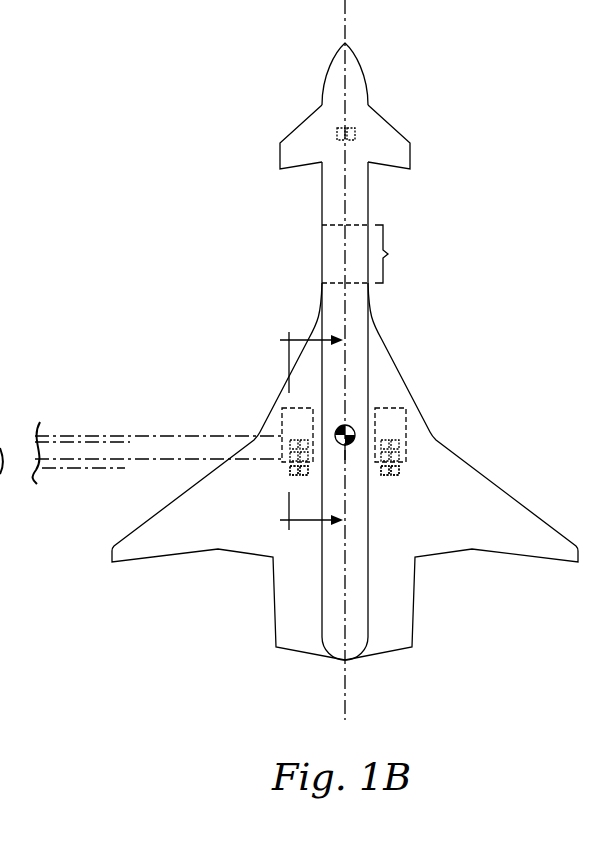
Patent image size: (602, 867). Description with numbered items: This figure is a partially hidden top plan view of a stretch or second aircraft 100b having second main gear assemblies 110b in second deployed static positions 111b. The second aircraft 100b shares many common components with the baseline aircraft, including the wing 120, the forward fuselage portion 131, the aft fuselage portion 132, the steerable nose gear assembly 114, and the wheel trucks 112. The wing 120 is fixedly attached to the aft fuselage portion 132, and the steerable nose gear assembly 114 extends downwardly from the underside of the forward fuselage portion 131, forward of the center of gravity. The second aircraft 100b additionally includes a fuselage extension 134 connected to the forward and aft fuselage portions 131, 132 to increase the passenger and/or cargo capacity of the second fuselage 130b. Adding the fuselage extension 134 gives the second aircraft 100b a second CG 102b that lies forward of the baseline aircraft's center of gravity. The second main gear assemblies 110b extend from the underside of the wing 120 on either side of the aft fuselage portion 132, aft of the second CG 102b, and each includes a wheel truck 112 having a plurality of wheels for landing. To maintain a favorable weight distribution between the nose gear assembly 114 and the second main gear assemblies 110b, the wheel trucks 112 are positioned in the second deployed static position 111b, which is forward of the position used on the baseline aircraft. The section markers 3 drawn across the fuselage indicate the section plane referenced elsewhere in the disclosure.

The second aircraft 100b is at (372, 338).
The second CG 102b is at (355, 425).
The second main gear assemblies 110b is at (280, 452).
The second deployed static position 111b is at (104, 455).
The wheel truck 112 is at (385, 478).
The steerable nose gear assembly 114 is at (335, 132).
The wing 120 is at (157, 512).
The second fuselage 130b is at (322, 205).
The forward fuselage portion 131 is at (370, 82).
The aft fuselage portion 132 is at (369, 334).
The fuselage extension 134 is at (390, 254).
The section line 3- 3 is at (311, 435).